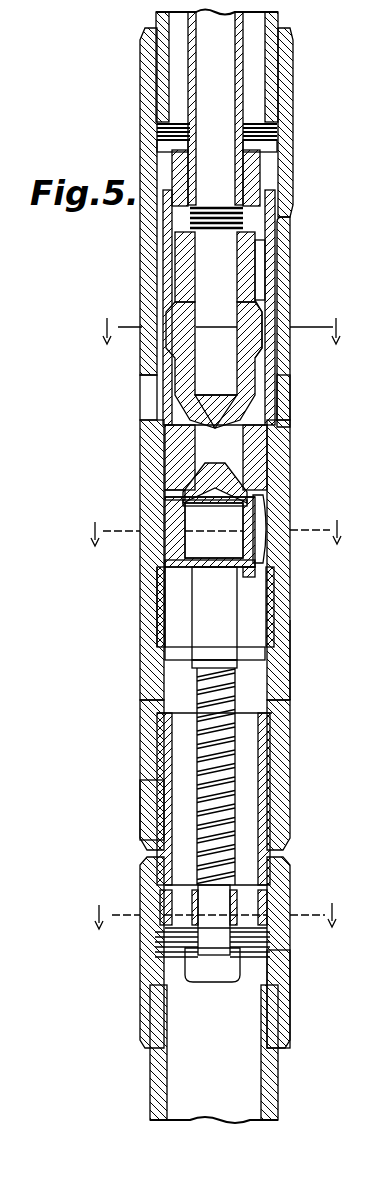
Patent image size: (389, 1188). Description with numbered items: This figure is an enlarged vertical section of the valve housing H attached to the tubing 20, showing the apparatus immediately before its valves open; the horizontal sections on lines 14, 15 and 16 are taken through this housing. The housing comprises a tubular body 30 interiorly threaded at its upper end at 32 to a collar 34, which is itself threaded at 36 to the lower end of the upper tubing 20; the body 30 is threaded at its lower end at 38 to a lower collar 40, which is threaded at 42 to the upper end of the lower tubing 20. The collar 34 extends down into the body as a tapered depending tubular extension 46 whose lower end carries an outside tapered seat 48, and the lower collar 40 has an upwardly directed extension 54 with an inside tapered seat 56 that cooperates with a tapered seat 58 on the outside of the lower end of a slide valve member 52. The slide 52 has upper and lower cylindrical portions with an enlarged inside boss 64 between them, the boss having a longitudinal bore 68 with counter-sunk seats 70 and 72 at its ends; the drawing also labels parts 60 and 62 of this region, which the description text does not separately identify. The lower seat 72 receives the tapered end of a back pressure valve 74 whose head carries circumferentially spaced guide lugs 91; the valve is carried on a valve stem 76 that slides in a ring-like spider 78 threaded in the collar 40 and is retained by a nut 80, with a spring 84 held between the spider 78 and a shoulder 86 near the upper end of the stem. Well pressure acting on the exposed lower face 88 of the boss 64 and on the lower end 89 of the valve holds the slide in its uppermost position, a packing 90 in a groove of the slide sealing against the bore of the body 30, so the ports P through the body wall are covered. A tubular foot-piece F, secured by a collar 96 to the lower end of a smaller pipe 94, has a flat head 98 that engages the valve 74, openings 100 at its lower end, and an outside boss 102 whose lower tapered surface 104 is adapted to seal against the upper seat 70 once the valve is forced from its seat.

The tubing 20 is at (278, 20).
The tapered depending tubular extension 46 is at (163, 272).
The interior thread 36 is at (284, 100).
The smaller pipe 94 is at (262, 138).
The collar 96 is at (262, 195).
The collar 34 is at (284, 210).
The outside tapered seat 48 is at (165, 345).
The interior thread 32 is at (262, 268).
The tubular foot-piece F is at (268, 290).
The openings 100 is at (170, 395).
The outside boss 102 is at (258, 312).
The lower tapered surface 104 is at (250, 355).
The section line 14— 14 is at (222, 328).
The ports P is at (150, 412).
The valve housing 60 is at (284, 372).
The flat head 98 is at (165, 430).
The inside boss 64 is at (183, 462).
The upper counter-sunk seat 70 is at (270, 440).
The longitudinal bore 68 is at (262, 487).
The lower counter-sunk seat 72 is at (262, 503).
The slide valve member 52 is at (180, 482).
The exposed lower face 88 is at (185, 497).
The back pressure valve 74 is at (165, 535).
The section line 15— 15 is at (221, 529).
The packing 90 is at (258, 470).
The guide lugs 91 is at (248, 548).
The tubular body 30 is at (272, 560).
The lower end of valve member 89 is at (255, 585).
The valve stem 76 is at (200, 595).
The outside tapered seat 58 is at (160, 640).
The sleeve 62 is at (270, 606).
The shoulder 86 is at (196, 667).
The spring 84 is at (238, 758).
The housing H is at (291, 665).
The inside tapered seat 56 is at (270, 712).
The interior thread 38 is at (282, 805).
The upwardly directed extension 54 is at (152, 815).
The lower collar 40 is at (280, 870).
The interior thread 42 is at (283, 990).
The section line 16— 16 is at (218, 911).
The ring-like spider 78 is at (165, 925).
The retaining nut 80 is at (190, 975).